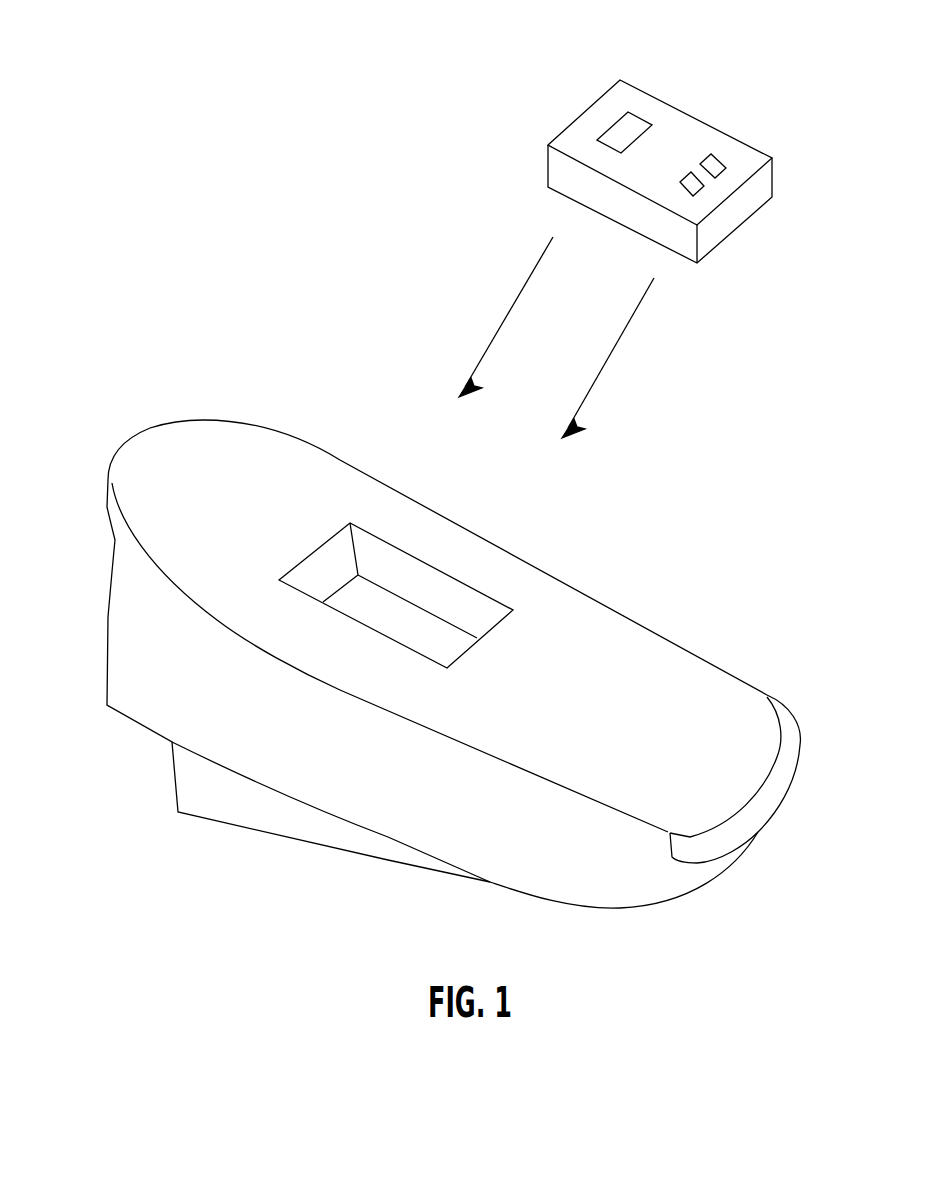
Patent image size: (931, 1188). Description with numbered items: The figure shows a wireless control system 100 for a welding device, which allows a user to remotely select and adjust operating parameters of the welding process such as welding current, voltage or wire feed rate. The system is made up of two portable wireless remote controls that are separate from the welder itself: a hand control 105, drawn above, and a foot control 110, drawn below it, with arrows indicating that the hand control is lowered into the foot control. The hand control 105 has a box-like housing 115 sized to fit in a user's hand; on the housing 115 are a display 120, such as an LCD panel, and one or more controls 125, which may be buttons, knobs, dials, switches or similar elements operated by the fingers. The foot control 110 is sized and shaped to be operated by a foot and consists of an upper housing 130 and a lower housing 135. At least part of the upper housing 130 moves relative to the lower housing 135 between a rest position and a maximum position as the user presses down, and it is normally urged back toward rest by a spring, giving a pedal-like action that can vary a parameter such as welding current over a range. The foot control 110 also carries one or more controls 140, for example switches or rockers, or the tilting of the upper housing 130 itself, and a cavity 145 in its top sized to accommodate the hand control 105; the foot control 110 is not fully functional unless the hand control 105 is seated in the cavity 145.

The wireless control system 100 is at (235, 107).
The hand control 105 is at (693, 118).
The foot control 110 is at (682, 647).
The housing 115 is at (565, 175).
The display 120 is at (617, 121).
The controls 125 is at (698, 188).
The upper housing 130 is at (135, 617).
The lower housing 135 is at (195, 787).
The controls 140 is at (782, 760).
The cavity 145 is at (397, 610).